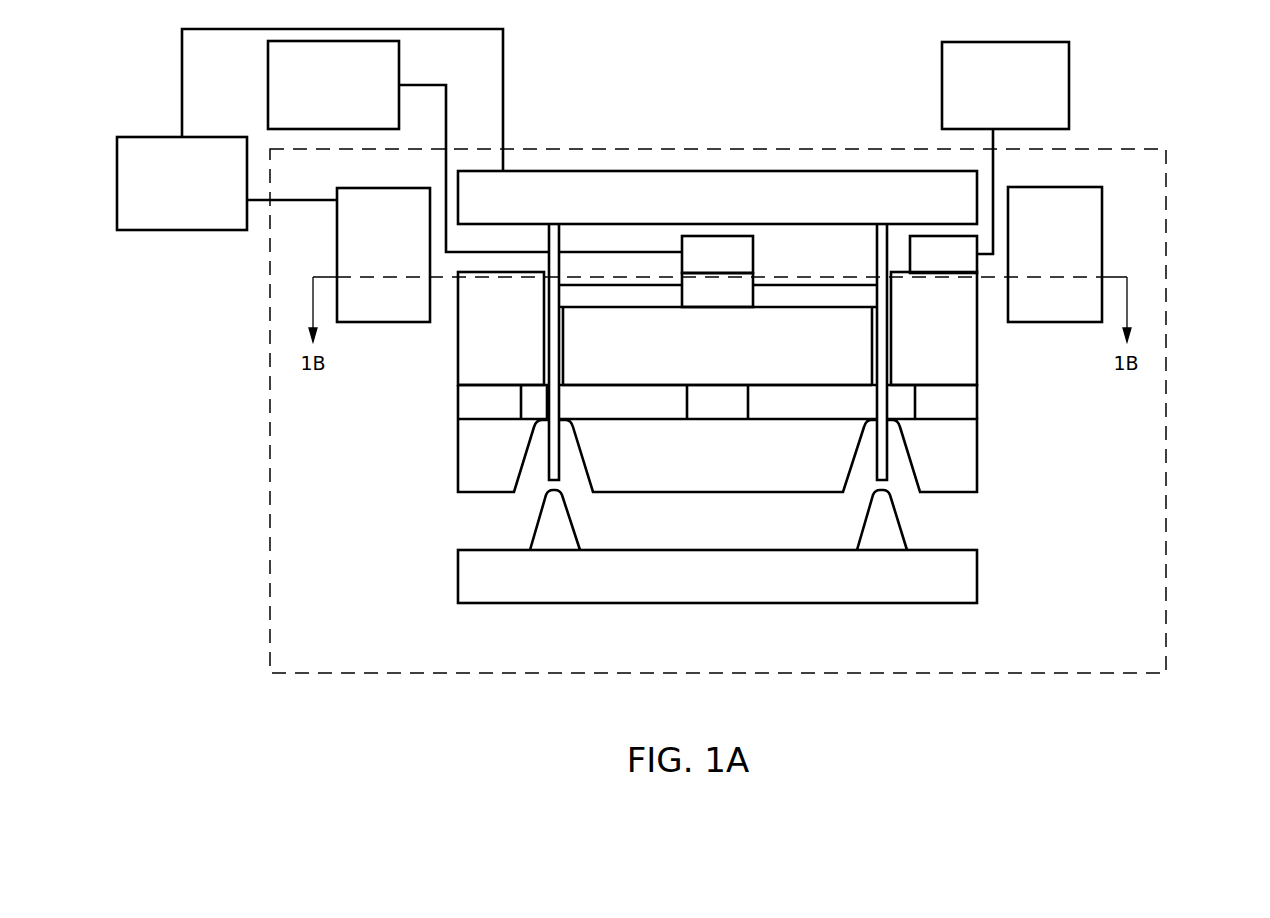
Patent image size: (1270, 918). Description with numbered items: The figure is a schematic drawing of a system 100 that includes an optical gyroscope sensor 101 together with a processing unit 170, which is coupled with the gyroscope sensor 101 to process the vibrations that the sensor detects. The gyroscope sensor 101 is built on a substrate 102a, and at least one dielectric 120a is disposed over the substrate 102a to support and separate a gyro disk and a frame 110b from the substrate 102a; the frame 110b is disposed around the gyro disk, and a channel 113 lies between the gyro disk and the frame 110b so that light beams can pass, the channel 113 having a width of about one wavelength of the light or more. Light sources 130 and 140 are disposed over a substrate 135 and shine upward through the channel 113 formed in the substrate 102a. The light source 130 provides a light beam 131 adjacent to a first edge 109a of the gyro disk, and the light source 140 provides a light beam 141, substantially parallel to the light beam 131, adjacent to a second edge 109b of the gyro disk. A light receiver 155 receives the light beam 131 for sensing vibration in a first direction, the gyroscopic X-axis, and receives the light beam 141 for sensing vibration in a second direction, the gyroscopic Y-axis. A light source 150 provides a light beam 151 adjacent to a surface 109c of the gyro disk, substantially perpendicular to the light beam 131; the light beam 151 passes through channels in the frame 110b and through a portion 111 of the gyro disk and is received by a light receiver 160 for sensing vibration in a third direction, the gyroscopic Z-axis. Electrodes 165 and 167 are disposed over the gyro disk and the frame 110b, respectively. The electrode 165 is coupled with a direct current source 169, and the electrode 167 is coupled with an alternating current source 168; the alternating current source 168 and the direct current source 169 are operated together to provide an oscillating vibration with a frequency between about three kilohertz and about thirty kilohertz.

The system 100 is at (1192, 179).
The gyroscope sensor 101 is at (1172, 522).
The substrate 102a is at (707, 468).
The first edge 109a is at (563, 350).
The second edge 109b is at (870, 338).
The surface 109c is at (643, 308).
The frame 110b is at (480, 339).
The portion of the gyro disk 111 is at (701, 304).
The channel 113 is at (583, 495).
The dielectric 120a is at (468, 412).
The light source 130 is at (542, 526).
The light beam 131 is at (559, 403).
The substrate 135 is at (777, 586).
The light source 140 is at (893, 526).
The light beam 141 is at (877, 403).
The light source 150 is at (1039, 271).
The light beam 151 is at (594, 297).
The light receiver 155 is at (816, 208).
The light receiver 160 is at (368, 271).
The electrode 165 is at (701, 265).
The electrode 167 is at (927, 265).
The alternating current (AC) source 168 is at (989, 107).
The direct current (DC) source 169 is at (317, 107).
The processing unit 170 is at (166, 219).